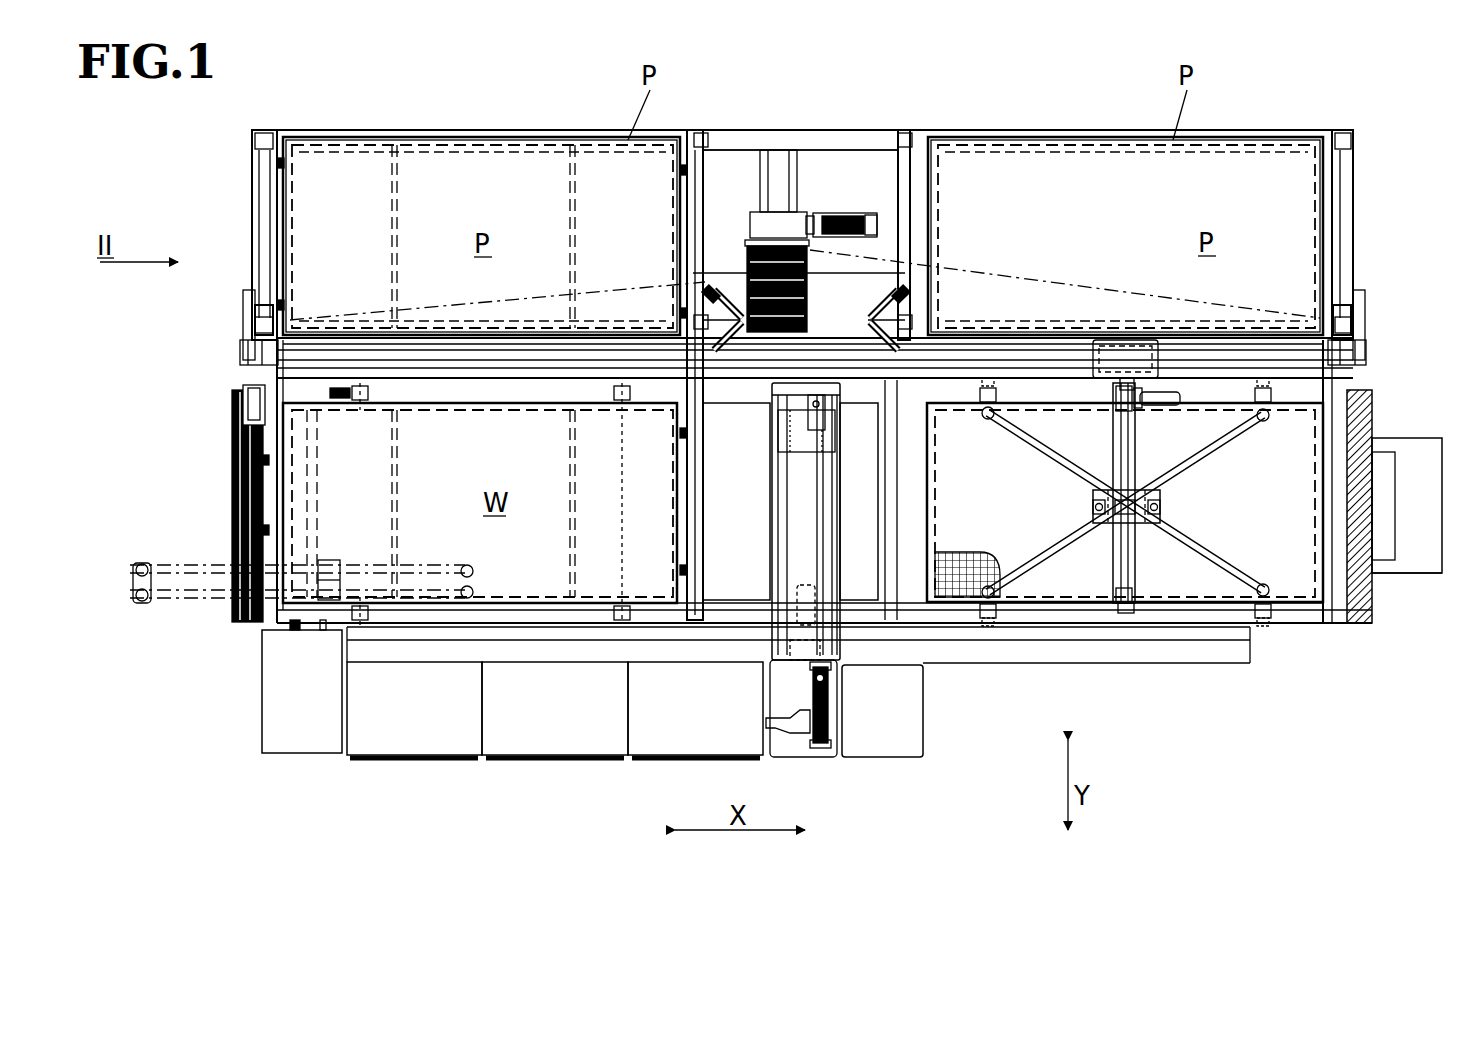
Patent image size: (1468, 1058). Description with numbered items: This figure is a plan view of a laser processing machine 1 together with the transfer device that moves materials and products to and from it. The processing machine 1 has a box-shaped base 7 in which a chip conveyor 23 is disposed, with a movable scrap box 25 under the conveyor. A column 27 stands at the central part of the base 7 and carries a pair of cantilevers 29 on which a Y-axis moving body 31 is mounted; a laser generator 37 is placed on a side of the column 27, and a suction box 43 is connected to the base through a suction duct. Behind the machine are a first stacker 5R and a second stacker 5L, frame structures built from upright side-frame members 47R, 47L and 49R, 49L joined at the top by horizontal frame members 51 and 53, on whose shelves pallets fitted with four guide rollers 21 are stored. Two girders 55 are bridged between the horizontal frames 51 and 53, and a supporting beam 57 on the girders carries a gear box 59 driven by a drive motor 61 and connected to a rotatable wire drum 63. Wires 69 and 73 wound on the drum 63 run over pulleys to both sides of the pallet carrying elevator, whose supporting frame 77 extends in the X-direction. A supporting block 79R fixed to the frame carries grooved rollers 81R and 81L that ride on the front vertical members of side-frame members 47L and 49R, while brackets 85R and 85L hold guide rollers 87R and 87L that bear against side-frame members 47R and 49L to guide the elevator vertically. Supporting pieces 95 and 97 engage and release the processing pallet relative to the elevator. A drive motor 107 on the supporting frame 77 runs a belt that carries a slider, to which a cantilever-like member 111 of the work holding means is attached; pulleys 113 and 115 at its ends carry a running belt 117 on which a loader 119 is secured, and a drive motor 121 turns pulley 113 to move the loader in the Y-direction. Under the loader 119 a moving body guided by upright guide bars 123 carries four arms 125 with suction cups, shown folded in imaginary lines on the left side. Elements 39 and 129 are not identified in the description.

The processing machine 1 is at (705, 770).
The second stacker 5L is at (524, 122).
The first stacker 5R is at (1100, 122).
The base 7 is at (1290, 625).
The guide rollers 21 is at (260, 155).
The chip conveyor 23 is at (1405, 500).
The movable scrap box 25 is at (1410, 575).
The column 27 is at (818, 752).
The cantilevers 29 is at (773, 502).
The Y-axis moving body 31 is at (838, 432).
The laser generator 37 is at (598, 755).
The control box 39 is at (898, 758).
The suction box 43 is at (262, 698).
The left side-frame member 47L is at (906, 215).
The right side-frame member 47R is at (1355, 205).
The left side-frame member 49L is at (250, 200).
The right side-frame member 49R is at (700, 218).
The horizontal frame member 51 is at (1023, 135).
The horizontal frame member 53 is at (437, 135).
The girders 55 is at (795, 132).
The supporting beam 57 is at (799, 193).
The gear box 59 is at (752, 212).
The drive motor 61 is at (880, 225).
The wire drum 63 is at (808, 300).
The wire 69 is at (1020, 282).
The wire 73 is at (432, 300).
The supporting frame 77 is at (1018, 350).
The supporting block 79R is at (870, 330).
The grooved roller 81L is at (715, 300).
The grooved roller 81R is at (912, 300).
The bracket 85L is at (258, 322).
The bracket 85R is at (1350, 322).
The guide roller 87L is at (255, 345).
The guide roller 87R is at (1352, 348).
The supporting pieces 95 is at (1266, 345).
The supporting pieces 97 is at (357, 400).
The drive motor 107 is at (232, 415).
The cantilever-like member 111 is at (1138, 560).
The pulley 113 is at (1142, 402).
The pulley 115 is at (1127, 610).
The running belt 117 is at (1095, 505).
The loader 119 is at (325, 568).
The drive motor 121 is at (1138, 393).
The upright guide bars 123 is at (1095, 510).
The arms 125 is at (420, 566).
The roller 129 is at (476, 592).